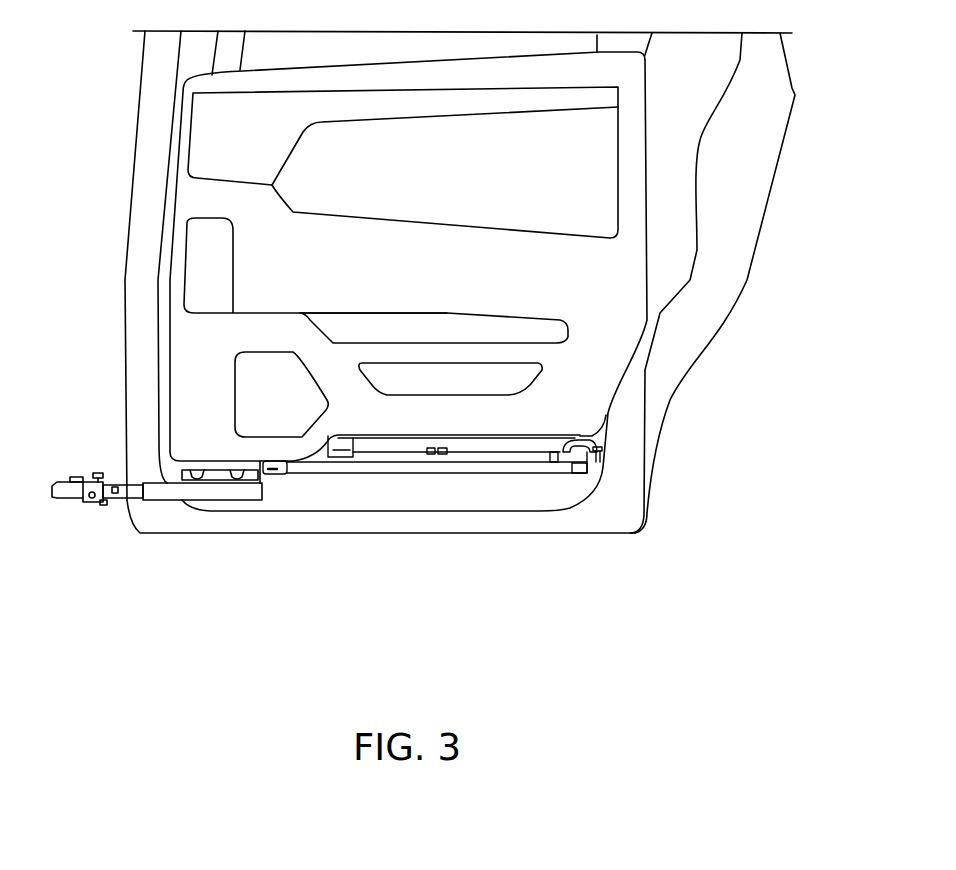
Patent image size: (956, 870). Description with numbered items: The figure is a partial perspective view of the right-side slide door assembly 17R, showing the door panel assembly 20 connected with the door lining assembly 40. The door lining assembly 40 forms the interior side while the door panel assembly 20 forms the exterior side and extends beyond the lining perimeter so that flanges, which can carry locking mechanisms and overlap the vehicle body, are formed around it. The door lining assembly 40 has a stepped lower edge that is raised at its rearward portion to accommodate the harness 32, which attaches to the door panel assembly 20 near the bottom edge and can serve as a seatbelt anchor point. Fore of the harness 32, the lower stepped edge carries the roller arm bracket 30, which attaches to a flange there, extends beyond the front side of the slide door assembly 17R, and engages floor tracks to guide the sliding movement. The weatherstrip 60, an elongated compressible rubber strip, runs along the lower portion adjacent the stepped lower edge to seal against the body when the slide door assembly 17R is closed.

The door panel assembly 20 is at (728, 212).
The right-side slide door assembly 17R is at (727, 343).
The roller arm bracket 30 is at (157, 488).
The harness 32 is at (617, 440).
The door lining assembly 40 is at (462, 417).
The weatherstrip 60 is at (523, 468).